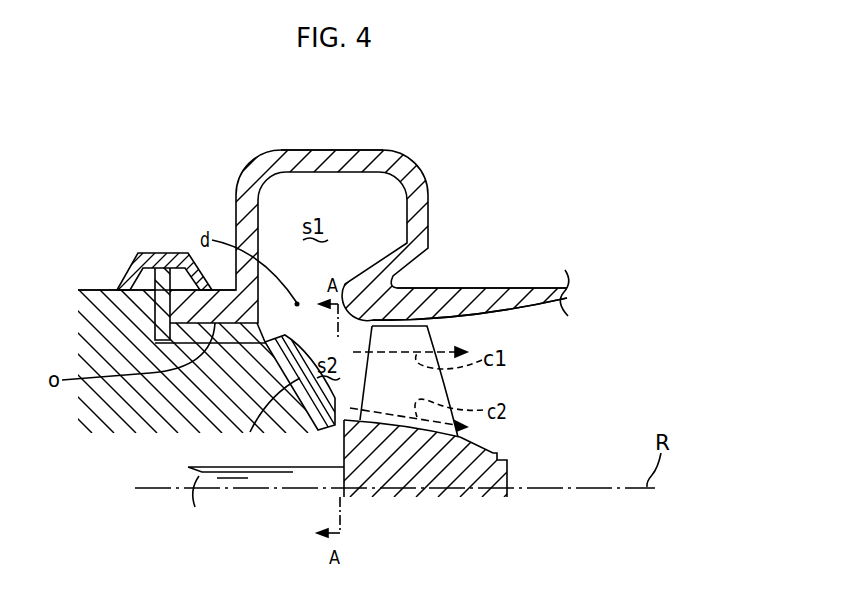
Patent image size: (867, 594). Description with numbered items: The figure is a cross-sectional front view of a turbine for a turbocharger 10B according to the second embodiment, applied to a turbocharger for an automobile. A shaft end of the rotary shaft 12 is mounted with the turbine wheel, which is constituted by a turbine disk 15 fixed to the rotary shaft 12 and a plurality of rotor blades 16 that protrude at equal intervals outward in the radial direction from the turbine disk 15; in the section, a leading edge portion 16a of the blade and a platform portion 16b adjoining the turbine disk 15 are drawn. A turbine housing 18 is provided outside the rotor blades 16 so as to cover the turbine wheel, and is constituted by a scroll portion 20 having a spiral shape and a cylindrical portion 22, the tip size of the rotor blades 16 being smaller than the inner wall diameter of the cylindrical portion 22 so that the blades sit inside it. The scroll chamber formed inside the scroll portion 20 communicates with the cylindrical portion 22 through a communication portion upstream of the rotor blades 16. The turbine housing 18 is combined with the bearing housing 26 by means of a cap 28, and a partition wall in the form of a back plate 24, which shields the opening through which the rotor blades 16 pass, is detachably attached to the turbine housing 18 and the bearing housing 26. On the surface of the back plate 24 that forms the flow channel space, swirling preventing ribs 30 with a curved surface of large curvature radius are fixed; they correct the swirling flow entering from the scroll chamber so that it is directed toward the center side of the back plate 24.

The turbine for a turbocharger 10B is at (540, 125).
The rotary shaft 12 is at (192, 476).
The turbine disk 15 is at (507, 473).
The rotor blades 16 is at (478, 383).
The blade leading edge 16a is at (362, 366).
The blade platform 16b is at (458, 438).
The turbine housing 18 is at (358, 143).
The scroll portion 20 is at (304, 150).
The cylindrical portion 22 is at (504, 288).
The back plate 24 is at (170, 316).
The bearing housing 26 is at (97, 290).
The cap 28 is at (165, 253).
The swirling preventing rib 30 is at (270, 418).